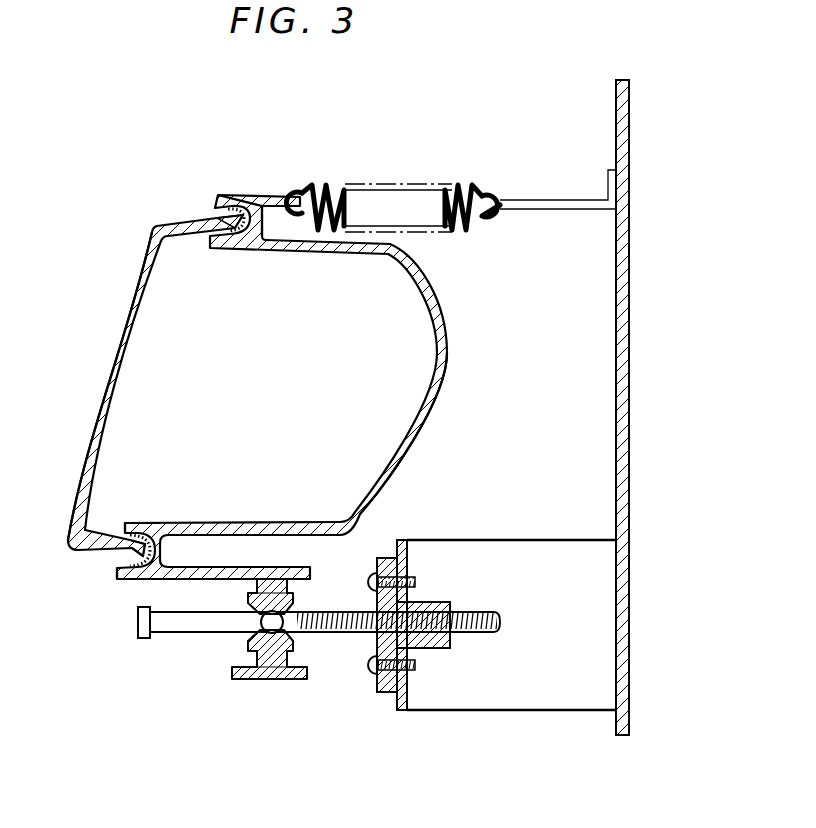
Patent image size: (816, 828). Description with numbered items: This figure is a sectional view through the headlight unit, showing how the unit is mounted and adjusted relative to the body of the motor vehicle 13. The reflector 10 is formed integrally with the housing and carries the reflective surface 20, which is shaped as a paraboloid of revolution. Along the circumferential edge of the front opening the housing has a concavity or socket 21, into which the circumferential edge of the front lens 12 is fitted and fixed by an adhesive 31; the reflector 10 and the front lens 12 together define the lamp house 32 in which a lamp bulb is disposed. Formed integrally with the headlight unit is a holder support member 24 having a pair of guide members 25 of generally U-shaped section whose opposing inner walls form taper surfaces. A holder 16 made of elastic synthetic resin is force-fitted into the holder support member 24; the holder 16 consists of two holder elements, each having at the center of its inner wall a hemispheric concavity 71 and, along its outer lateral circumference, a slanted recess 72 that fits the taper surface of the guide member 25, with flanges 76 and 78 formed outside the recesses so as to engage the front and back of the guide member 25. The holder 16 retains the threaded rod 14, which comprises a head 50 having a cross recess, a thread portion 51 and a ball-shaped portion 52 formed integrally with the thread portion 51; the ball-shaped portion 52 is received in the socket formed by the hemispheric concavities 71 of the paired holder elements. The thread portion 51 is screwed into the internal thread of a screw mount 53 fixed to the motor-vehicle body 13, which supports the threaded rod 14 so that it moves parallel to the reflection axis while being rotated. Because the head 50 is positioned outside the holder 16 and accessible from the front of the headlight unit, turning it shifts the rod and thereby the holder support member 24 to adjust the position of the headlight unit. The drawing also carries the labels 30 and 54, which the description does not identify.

The reflector 10 is at (452, 358).
The front lens 12 is at (110, 362).
The body of motor vehicle 13 is at (632, 480).
The threaded rod 14 is at (186, 636).
The holder 16 is at (246, 652).
The reflective surface 20 is at (418, 398).
The concavity or socket 21 is at (244, 197).
The holder support member 24 is at (256, 682).
The guide member 25 is at (262, 578).
The lip 30 is at (215, 222).
The adhesive 31 is at (236, 205).
The lamp house 32 is at (108, 432).
The head 50 is at (137, 626).
The thread portion 51 is at (346, 636).
The ball-shaped portion 52 is at (262, 628).
The screw mount 53 is at (380, 702).
The threaded hub 54 is at (420, 620).
The hemispheric concavity 71 is at (284, 620).
The slanted recess 72 is at (276, 590).
The flange 76 is at (248, 600).
The flange 78 is at (290, 606).